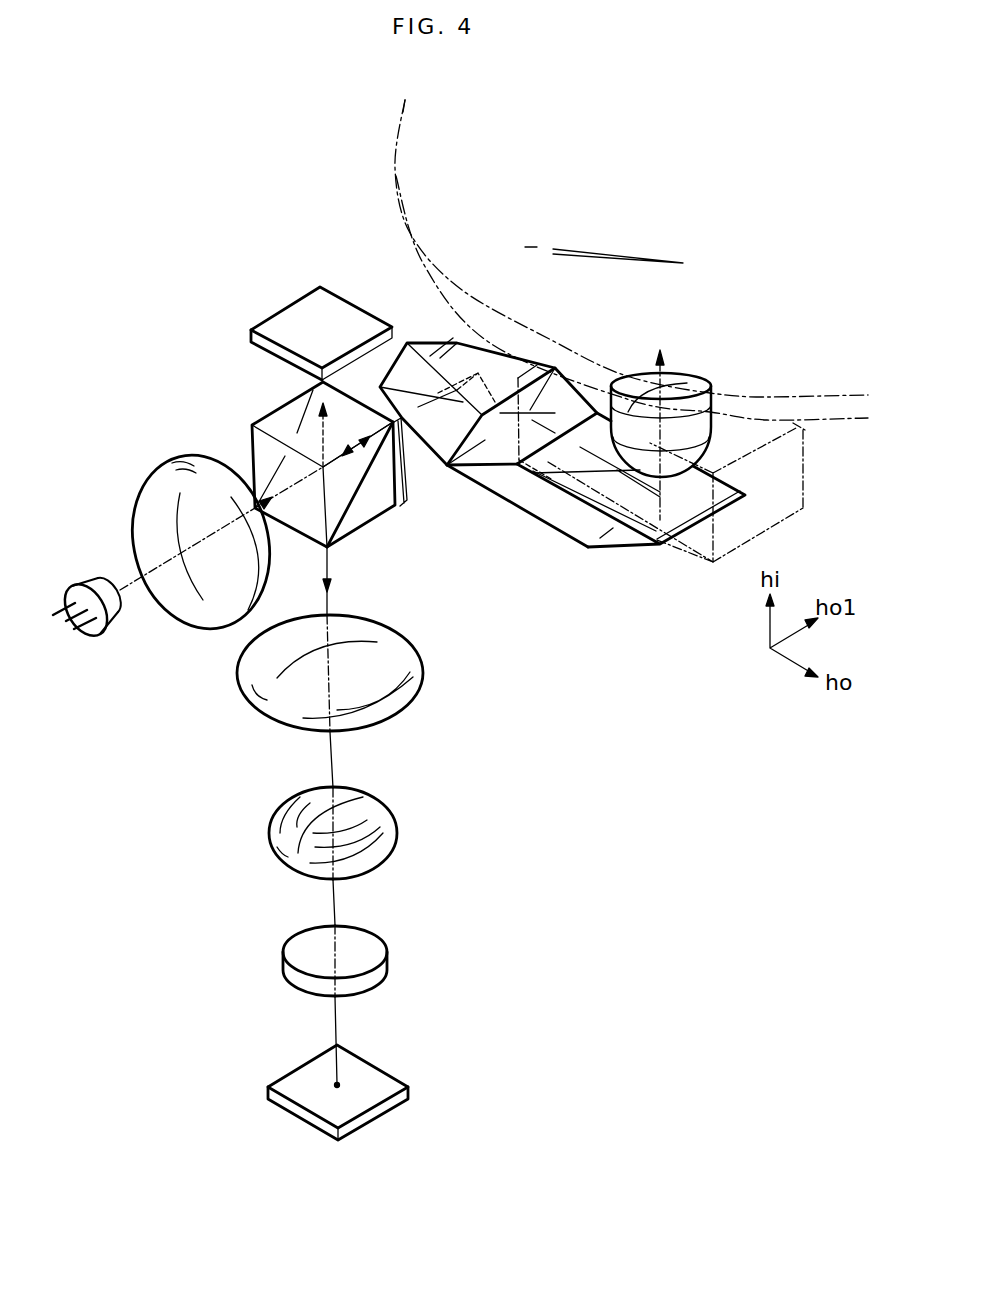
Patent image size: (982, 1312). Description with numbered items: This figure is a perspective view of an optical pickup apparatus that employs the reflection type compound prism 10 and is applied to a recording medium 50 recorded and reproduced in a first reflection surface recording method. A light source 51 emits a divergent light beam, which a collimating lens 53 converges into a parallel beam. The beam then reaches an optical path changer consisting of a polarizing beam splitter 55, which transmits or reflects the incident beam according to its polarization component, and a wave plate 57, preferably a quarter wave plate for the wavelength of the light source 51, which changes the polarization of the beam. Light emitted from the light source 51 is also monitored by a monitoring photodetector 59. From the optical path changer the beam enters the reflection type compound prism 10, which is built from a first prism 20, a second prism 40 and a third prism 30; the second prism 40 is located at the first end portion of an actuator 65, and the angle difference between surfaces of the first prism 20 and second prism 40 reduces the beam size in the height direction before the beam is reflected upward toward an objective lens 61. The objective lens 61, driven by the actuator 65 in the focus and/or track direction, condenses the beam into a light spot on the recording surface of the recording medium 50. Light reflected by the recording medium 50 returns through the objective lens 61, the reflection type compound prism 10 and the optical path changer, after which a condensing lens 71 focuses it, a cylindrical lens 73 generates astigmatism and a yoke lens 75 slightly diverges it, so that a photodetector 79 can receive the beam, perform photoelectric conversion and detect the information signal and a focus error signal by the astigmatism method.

The reflection type compound prism 10 is at (567, 553).
The first prism 20 is at (453, 343).
The third prism 30 is at (487, 457).
The second prism 40 is at (527, 517).
The recording medium 50 is at (395, 168).
The light source 51 is at (115, 617).
The collimating lens 53 is at (162, 457).
The polarizing beam splitter 55 is at (363, 527).
The wave plate 57 is at (400, 506).
The monitoring photodetector 59 is at (287, 307).
The objective lens 61 is at (712, 440).
The actuator 65 is at (780, 527).
The condensing lens 71 is at (402, 643).
The cylindrical lens 73 is at (387, 818).
The yoke lens 75 is at (380, 945).
The photodetector 79 is at (388, 1075).